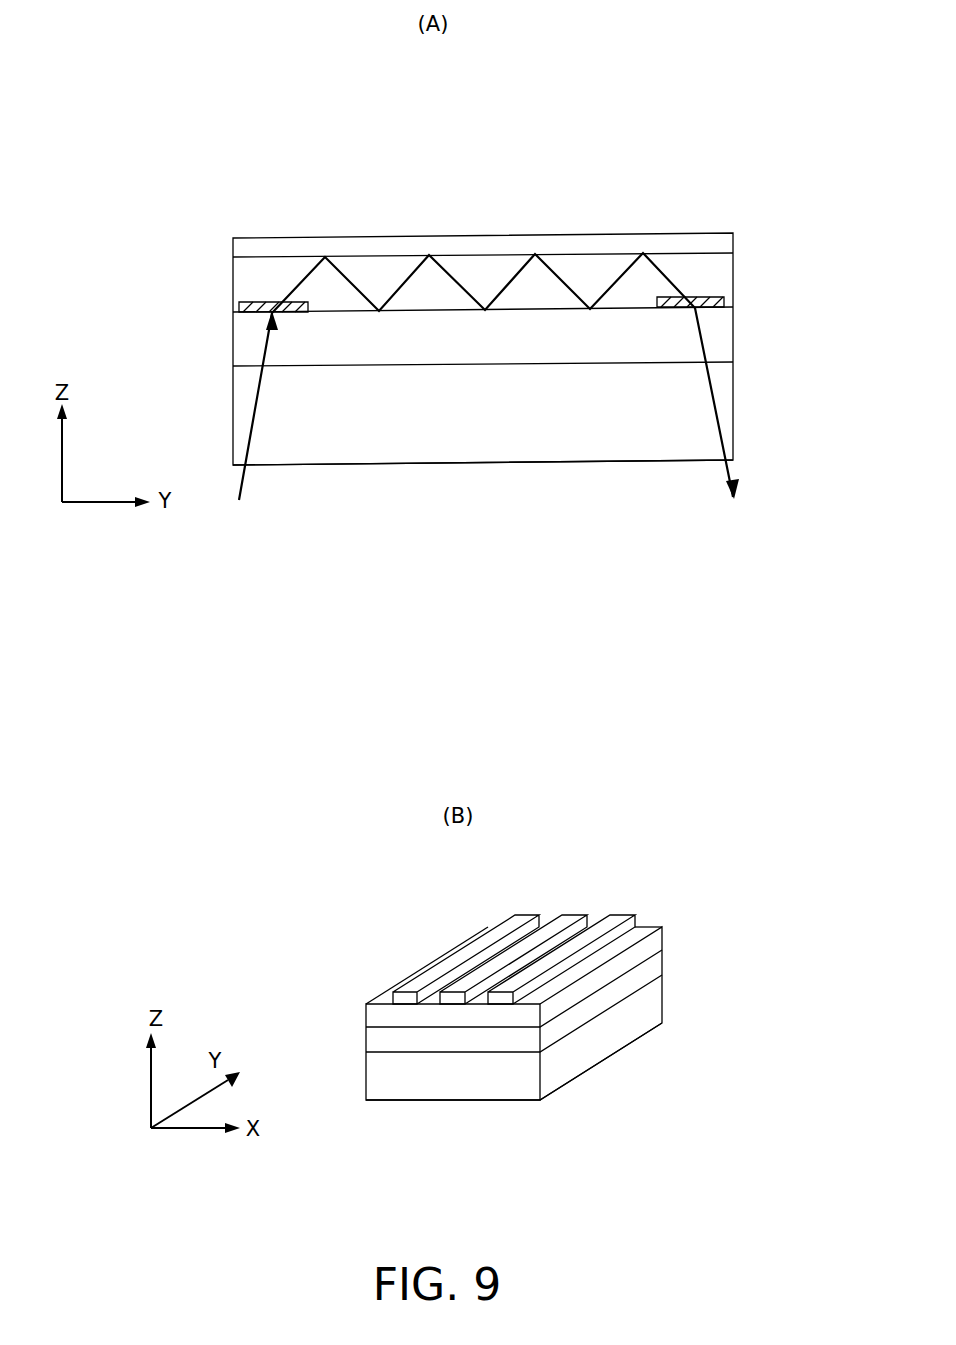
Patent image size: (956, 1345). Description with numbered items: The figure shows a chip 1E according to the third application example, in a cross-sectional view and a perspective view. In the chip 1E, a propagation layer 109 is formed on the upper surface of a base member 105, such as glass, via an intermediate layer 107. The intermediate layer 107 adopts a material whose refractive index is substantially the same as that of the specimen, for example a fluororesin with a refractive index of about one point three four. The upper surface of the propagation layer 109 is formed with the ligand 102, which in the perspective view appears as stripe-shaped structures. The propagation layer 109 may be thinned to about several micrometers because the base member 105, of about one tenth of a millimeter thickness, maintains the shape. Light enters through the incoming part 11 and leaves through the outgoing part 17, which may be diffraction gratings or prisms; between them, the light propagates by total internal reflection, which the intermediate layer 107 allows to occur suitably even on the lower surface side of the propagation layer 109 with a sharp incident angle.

The chip 1E is at (133, 200).
The incoming part 11 is at (233, 283).
The outgoing part 17 is at (720, 328).
The ligand 102 is at (632, 236).
The base member 105 is at (233, 418).
The intermediate layer 107 is at (233, 340).
The propagation layer 109 is at (733, 255).